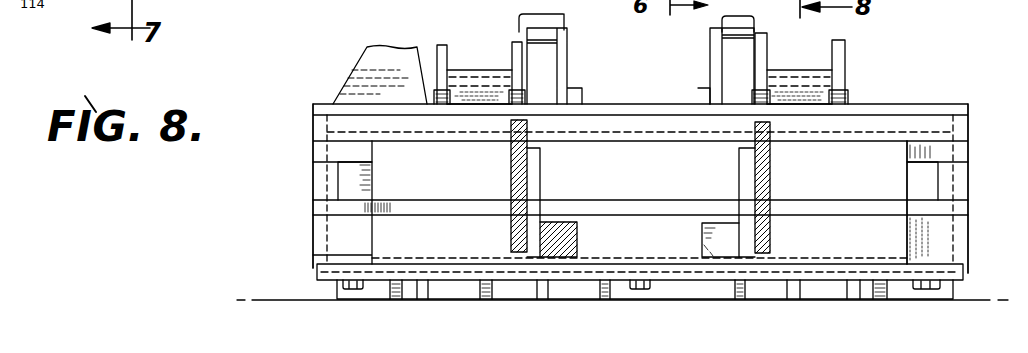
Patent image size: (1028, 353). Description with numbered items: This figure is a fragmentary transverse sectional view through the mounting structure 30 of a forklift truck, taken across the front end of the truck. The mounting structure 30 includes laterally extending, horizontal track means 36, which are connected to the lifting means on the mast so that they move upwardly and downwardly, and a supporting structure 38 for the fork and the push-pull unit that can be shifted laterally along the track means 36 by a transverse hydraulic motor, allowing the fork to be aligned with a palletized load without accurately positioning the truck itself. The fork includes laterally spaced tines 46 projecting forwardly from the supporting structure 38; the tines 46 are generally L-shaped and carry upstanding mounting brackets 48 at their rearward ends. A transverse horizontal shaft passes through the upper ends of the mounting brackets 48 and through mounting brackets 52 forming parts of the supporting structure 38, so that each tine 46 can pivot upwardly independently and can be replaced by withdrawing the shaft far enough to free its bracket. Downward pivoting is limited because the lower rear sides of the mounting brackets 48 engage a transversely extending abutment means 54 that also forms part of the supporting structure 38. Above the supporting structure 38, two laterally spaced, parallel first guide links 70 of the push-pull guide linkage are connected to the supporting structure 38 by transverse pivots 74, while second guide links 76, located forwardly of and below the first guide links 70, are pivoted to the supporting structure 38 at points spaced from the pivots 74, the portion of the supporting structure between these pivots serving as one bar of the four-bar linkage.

The mounting structure 30 is at (511, 227).
The track means 36 is at (893, 155).
The supporting structure 38 is at (861, 103).
The tines 46 is at (340, 293).
The mounting brackets 48 is at (338, 177).
The mounting brackets 52 is at (318, 194).
The abutment means 54 is at (345, 222).
The first guide links 70 is at (440, 47).
The transverse pivots 74 is at (482, 92).
The second guide links 76 is at (563, 14).